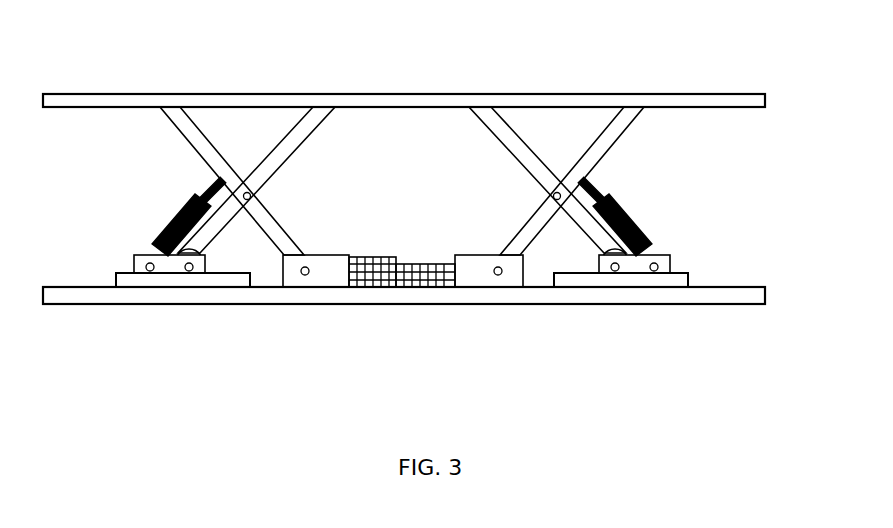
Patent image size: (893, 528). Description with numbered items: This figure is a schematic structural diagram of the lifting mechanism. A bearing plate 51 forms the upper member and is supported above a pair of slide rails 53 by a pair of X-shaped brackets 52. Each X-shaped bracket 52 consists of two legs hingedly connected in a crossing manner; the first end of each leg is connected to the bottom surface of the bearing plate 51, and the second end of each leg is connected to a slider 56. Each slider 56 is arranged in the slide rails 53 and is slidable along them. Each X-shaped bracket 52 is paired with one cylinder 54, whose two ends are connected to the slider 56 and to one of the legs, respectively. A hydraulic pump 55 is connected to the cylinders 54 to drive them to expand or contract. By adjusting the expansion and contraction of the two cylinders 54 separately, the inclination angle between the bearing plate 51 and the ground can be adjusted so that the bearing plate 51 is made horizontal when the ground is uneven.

The bearing plate 51 is at (413, 97).
The X-shaped bracket 52 is at (615, 140).
The slide rail 53 is at (718, 298).
The cylinder 54 is at (180, 223).
The hydraulic pump 55 is at (380, 277).
The slider 56 is at (190, 283).